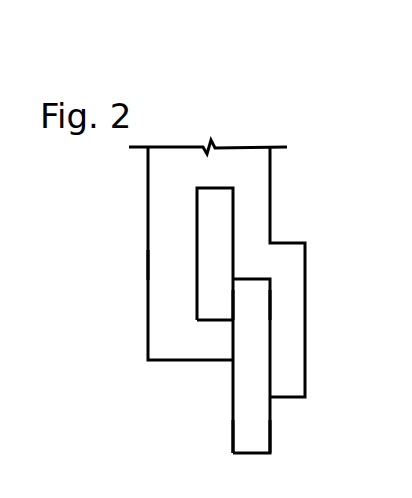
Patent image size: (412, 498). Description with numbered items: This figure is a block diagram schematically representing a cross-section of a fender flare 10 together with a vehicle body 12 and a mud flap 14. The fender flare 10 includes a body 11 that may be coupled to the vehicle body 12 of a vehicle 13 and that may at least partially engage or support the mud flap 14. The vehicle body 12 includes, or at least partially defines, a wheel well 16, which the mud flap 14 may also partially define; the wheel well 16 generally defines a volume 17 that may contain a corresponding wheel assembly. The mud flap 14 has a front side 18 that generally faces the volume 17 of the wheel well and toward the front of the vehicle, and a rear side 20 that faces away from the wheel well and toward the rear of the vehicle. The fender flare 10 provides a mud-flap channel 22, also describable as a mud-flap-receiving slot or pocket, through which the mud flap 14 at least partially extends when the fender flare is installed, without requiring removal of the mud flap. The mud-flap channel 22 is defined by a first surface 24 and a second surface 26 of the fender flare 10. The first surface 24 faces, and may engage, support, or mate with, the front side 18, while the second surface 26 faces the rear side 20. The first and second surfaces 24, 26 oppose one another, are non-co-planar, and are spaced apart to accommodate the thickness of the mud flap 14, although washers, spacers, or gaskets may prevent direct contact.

The fender flare 10 is at (306, 277).
The body 11 is at (287, 243).
The vehicle body 12 is at (148, 213).
The vehicle 13 is at (147, 265).
The mud flap 14 is at (233, 403).
The wheel well 16 is at (152, 427).
The volume 17 is at (165, 392).
The front side 18 is at (233, 441).
The rear side 20 is at (270, 438).
The mud-flap channel 22 is at (256, 321).
The first surface 24 is at (233, 302).
The second surface 26 is at (272, 300).